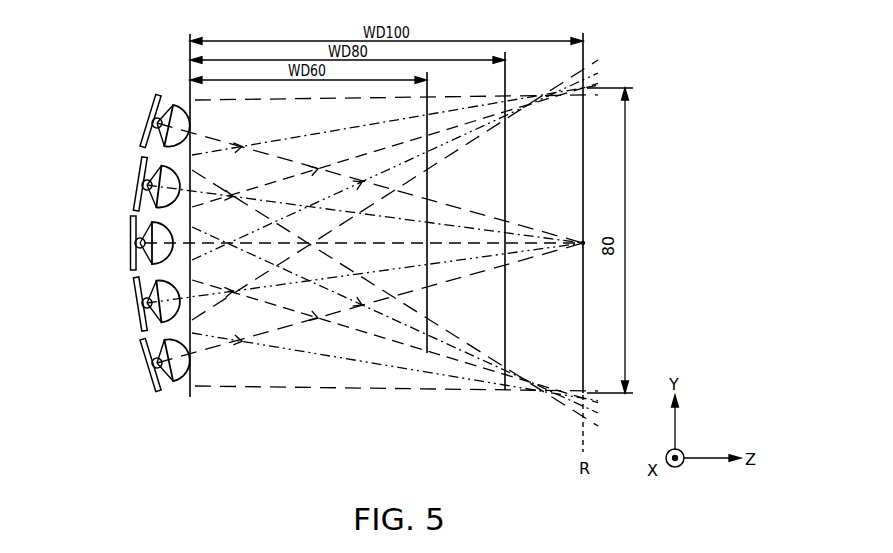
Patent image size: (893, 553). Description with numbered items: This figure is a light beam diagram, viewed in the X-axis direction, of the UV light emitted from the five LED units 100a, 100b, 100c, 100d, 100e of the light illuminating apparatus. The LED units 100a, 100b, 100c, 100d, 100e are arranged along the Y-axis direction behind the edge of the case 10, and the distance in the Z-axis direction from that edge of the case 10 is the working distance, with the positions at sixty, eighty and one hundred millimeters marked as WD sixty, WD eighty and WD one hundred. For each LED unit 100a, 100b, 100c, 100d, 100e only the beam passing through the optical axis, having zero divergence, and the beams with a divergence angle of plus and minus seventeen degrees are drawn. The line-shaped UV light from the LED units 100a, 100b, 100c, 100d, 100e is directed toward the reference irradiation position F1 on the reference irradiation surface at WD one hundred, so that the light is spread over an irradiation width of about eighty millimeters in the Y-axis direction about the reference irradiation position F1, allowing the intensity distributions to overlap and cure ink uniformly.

The case 10 is at (190, 52).
The LED unit 100a is at (152, 373).
The LED unit 100b is at (134, 314).
The LED unit 100c is at (131, 250).
The LED unit 100d is at (141, 175).
The LED unit 100e is at (152, 112).
The reference irradiation position F1 is at (581, 243).